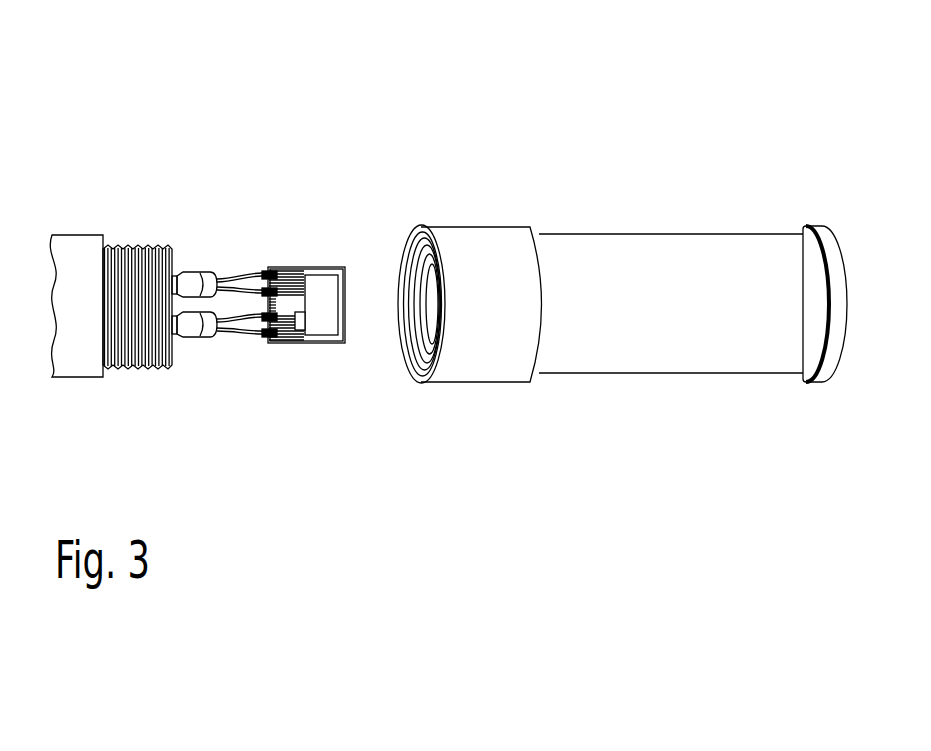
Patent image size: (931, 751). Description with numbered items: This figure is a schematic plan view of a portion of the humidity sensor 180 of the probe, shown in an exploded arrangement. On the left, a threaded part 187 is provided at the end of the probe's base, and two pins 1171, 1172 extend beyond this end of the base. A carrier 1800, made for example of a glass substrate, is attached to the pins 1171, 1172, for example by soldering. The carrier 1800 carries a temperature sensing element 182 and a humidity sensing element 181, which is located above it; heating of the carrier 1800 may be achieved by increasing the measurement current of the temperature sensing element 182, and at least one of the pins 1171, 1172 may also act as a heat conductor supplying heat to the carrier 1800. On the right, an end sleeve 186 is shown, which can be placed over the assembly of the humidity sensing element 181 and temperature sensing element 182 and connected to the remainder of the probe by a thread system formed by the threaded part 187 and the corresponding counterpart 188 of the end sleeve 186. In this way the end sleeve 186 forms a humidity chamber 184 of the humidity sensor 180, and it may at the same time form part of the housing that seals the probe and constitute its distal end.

The humidity sensor 180 is at (550, 107).
The humidity chamber 184 is at (263, 372).
The end sleeve 186 is at (678, 245).
The threaded part 187 is at (128, 246).
The counterpart 188 is at (484, 236).
The humidity sensing element 181 is at (298, 282).
The temperature sensing element 182 is at (305, 322).
The carrier 1800 is at (318, 268).
The pin 1171 is at (200, 271).
The pin 1172 is at (207, 338).